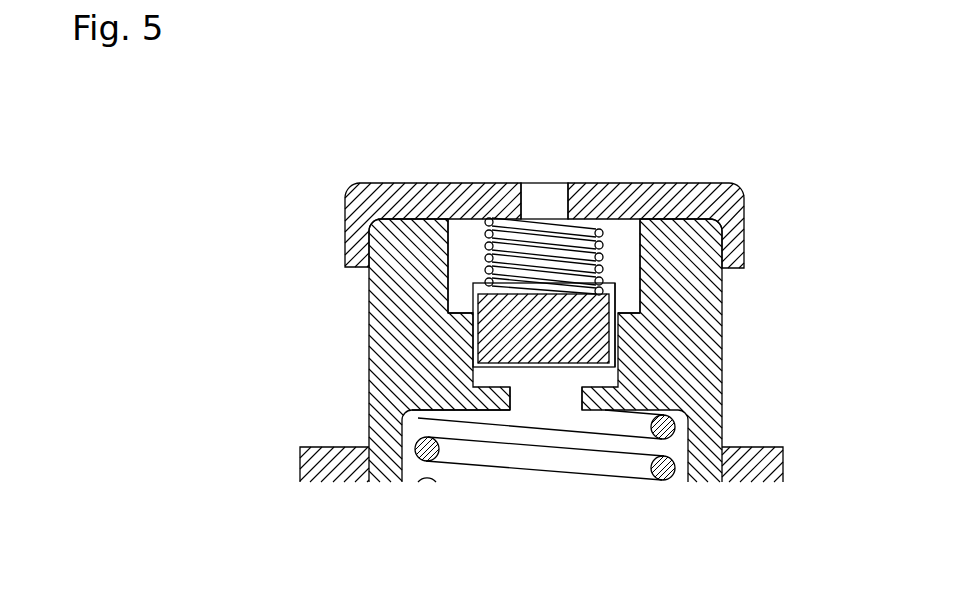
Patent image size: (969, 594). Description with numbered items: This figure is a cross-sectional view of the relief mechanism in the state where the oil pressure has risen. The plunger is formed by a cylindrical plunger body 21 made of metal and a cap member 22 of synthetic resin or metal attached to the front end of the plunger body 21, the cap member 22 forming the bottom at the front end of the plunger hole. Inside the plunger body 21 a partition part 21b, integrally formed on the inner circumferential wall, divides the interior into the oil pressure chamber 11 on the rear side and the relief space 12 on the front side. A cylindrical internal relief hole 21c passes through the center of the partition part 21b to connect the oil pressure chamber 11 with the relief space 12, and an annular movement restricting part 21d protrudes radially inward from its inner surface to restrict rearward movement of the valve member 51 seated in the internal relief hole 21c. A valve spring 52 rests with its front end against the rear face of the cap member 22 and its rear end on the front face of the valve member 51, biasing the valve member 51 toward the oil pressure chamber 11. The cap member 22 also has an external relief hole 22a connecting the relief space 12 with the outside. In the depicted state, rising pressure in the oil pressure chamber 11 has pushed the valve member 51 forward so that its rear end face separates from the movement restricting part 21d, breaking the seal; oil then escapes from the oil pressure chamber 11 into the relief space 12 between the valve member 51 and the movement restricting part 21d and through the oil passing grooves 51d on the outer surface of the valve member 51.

The oil pressure chamber 11 is at (622, 443).
The relief space 12 is at (470, 260).
The plunger body 21 is at (688, 262).
The partition part 21b is at (637, 323).
The internal relief hole 21c is at (623, 388).
The movement restricting part 21d is at (495, 408).
The cap member 22 is at (715, 182).
The external relief hole 22a is at (548, 197).
The valve member 51 is at (500, 327).
The oil passing grooves 51d is at (618, 338).
The valve spring 52 is at (484, 220).